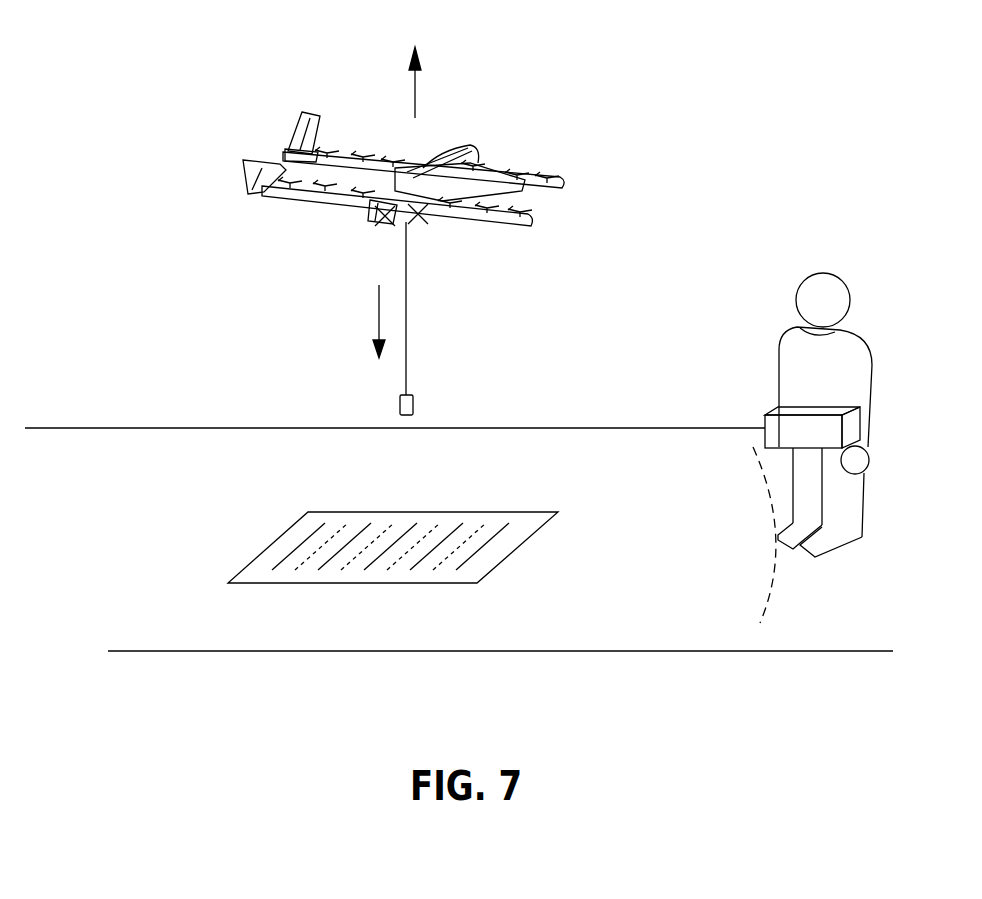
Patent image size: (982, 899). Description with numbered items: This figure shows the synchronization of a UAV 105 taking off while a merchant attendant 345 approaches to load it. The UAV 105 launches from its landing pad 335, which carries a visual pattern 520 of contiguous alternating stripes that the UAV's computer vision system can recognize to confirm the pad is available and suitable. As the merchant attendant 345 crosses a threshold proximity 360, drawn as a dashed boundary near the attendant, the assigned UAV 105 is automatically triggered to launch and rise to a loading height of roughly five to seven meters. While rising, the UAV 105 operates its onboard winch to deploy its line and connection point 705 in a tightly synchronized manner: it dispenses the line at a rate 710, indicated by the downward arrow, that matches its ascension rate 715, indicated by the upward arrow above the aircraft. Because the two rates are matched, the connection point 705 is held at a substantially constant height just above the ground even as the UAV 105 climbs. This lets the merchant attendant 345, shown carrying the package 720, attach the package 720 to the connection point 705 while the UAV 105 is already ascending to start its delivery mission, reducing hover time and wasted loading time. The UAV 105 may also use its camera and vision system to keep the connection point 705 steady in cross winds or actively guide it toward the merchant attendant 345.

The UAV 105 is at (496, 137).
The ascension rate 715 is at (411, 72).
The rate 710 is at (378, 323).
The connection point 705 is at (413, 407).
The landing pad 335 is at (520, 545).
The visual pattern 520 is at (304, 534).
The merchant attendant 345 is at (866, 360).
The package 720 is at (812, 427).
The threshold proximity 360 is at (777, 580).